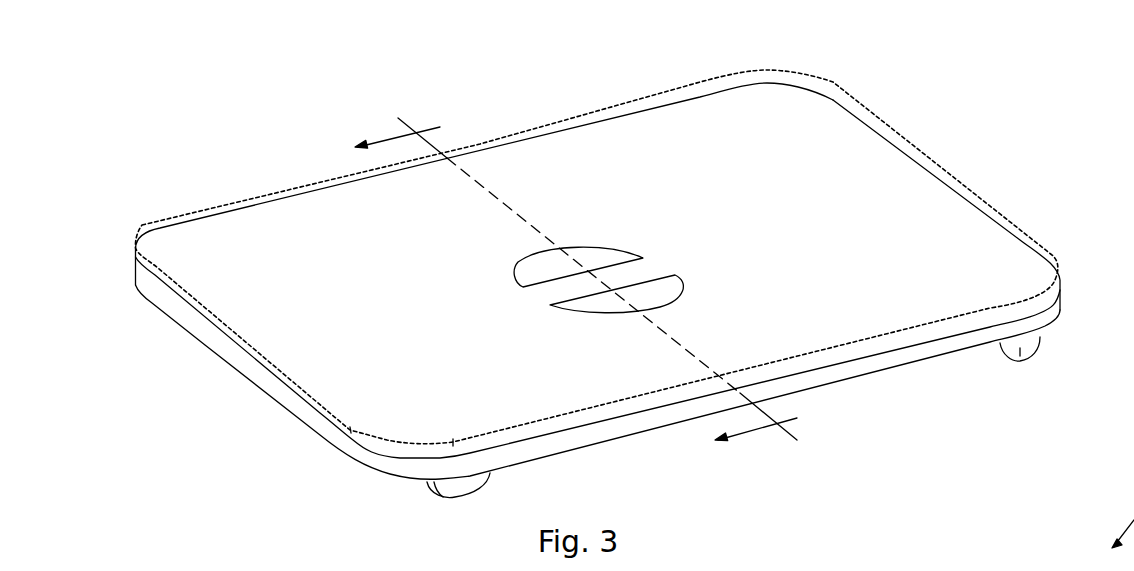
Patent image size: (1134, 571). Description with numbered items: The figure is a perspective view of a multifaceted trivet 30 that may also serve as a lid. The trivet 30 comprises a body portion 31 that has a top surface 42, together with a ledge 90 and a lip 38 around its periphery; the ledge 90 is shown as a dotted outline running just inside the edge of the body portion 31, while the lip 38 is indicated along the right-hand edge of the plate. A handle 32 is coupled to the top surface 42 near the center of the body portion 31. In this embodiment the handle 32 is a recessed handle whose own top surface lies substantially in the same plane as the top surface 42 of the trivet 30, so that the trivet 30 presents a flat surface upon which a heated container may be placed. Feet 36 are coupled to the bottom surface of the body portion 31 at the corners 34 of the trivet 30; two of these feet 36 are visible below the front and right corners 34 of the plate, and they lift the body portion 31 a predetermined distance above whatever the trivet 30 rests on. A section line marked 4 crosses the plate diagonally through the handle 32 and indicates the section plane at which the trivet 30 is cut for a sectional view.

The trivet 30 is at (627, 301).
The body portion 31 is at (283, 242).
The handle 32 is at (622, 270).
The corners 34 is at (1053, 310).
The feet 36 is at (457, 487).
The lip 38 is at (1023, 240).
The top surface 42 is at (867, 248).
The ledge 90 is at (832, 80).
The section line 4- 4 is at (567, 289).